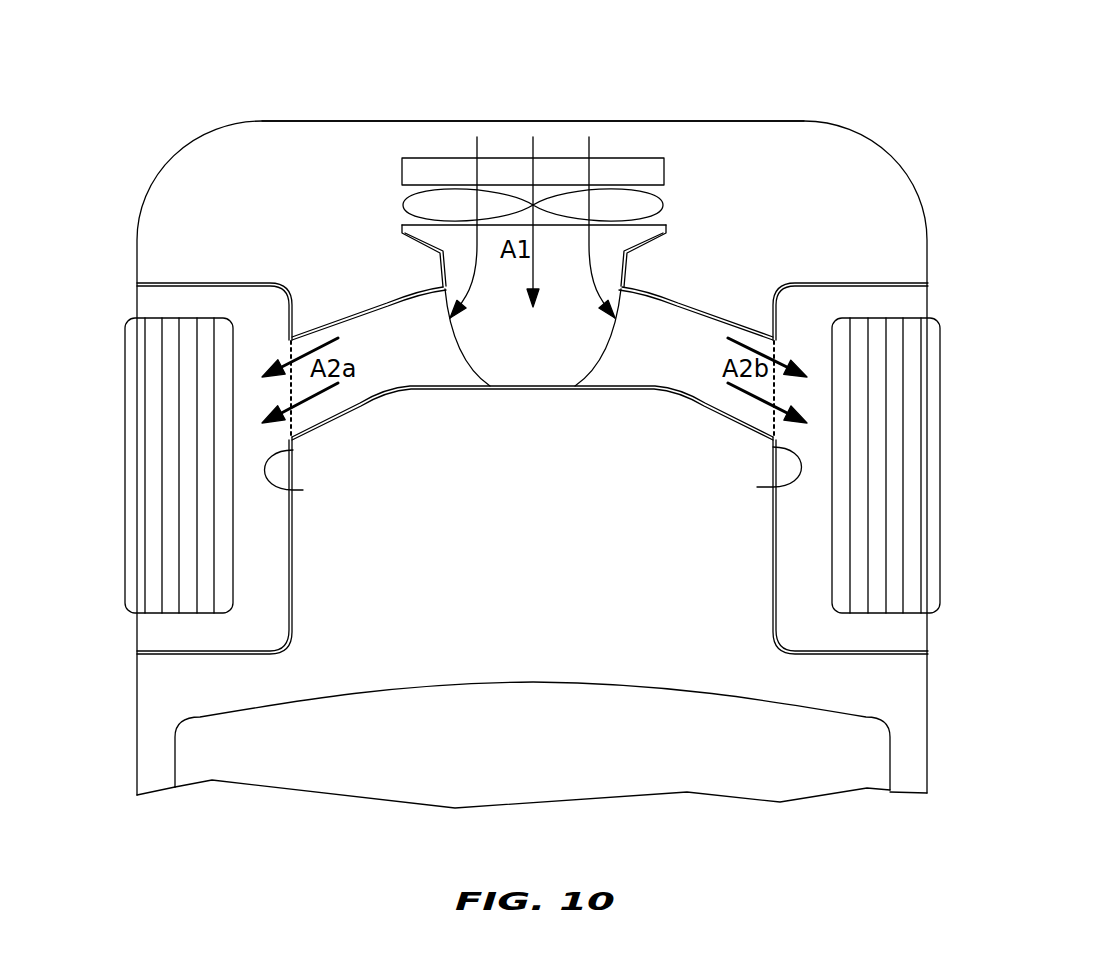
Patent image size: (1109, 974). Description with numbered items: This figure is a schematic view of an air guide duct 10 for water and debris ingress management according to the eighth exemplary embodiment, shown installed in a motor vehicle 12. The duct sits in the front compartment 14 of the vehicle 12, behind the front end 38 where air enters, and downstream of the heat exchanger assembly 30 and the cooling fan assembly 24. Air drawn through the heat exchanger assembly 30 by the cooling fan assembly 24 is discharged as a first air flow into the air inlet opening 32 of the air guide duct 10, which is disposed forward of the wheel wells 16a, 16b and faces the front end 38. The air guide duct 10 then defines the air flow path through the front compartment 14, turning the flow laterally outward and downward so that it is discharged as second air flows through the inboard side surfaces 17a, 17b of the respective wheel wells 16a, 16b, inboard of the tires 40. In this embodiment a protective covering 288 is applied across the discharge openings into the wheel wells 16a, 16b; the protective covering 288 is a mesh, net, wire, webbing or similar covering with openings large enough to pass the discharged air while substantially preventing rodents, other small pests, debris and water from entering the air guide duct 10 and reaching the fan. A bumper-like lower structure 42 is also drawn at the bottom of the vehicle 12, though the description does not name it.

The air guide duct 10 is at (533, 389).
The motor vehicle 12 is at (873, 112).
The front compartment 14 is at (541, 581).
The wheel well 16a is at (162, 635).
The wheel well 16b is at (905, 634).
The inboard side surface 17a is at (308, 478).
The inboard side surface 17b is at (760, 475).
The cooling fan assembly 24 is at (643, 205).
The heat exchanger assembly 30 is at (665, 173).
The air inlet opening 32 is at (402, 229).
The front end 38 is at (362, 121).
The tires 40 is at (155, 398).
The bumper 42 is at (717, 773).
The protective covering 288 is at (293, 418).